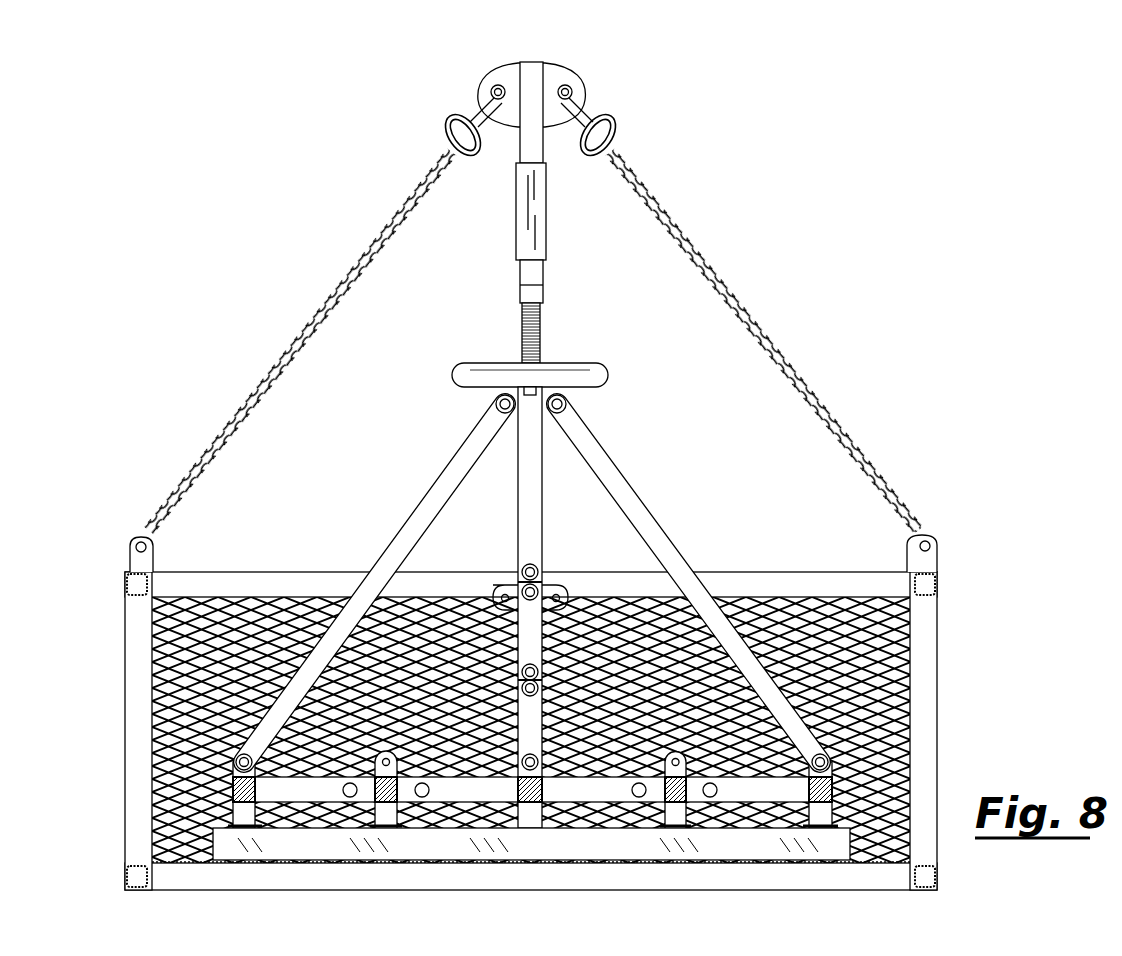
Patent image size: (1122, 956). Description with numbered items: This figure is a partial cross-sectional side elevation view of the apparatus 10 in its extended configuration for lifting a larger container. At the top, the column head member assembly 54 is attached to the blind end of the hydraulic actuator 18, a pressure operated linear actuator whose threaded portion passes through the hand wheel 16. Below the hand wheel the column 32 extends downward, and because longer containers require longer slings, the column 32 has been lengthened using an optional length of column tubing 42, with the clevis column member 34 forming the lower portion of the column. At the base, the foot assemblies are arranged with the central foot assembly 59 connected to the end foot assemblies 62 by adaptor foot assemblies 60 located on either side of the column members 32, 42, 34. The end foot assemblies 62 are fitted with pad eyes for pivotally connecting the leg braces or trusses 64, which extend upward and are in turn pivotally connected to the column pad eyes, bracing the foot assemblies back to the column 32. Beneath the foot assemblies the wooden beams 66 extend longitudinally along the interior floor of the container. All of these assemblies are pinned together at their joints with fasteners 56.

The apparatus 10 is at (732, 177).
The hand wheel 16 is at (472, 372).
The hydraulic actuator 18 is at (535, 215).
The column 32 is at (533, 497).
The clevis column member 34 is at (533, 722).
The column tubing 42 is at (525, 627).
The column head member assembly 54 is at (508, 140).
The fasteners 56 is at (913, 730).
The central foot assembly 59 is at (548, 790).
The adaptor foot assemblies 60 is at (428, 800).
The end foot assemblies 62 is at (222, 800).
The braces 64 is at (440, 493).
The wooden beams 66 is at (308, 848).